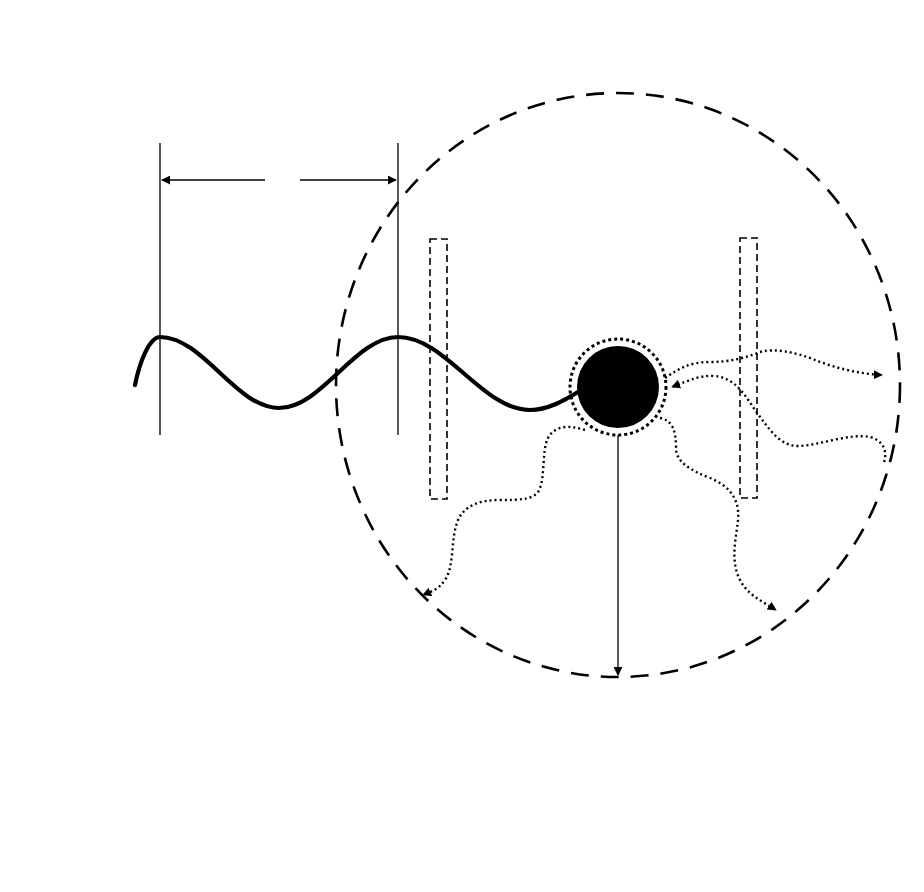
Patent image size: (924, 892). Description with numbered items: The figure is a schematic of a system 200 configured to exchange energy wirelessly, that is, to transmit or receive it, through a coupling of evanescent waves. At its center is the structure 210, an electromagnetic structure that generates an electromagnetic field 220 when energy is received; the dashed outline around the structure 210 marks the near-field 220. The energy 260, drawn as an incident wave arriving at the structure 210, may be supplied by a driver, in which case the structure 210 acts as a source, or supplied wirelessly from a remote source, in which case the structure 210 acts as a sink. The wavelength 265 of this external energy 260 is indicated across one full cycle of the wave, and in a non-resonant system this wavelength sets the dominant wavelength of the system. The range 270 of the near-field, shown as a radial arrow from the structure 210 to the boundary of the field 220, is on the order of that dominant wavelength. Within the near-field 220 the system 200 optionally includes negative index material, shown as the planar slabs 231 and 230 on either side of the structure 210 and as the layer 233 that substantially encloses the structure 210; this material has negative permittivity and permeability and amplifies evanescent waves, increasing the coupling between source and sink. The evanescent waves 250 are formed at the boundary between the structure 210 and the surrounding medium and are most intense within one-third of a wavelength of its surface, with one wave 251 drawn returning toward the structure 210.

The system 200 is at (517, 436).
The structure 210 is at (590, 346).
The electromagnetic field 220 is at (470, 132).
The negative index material 230 is at (759, 256).
The negative index material 231 is at (449, 265).
The negative index material 233 is at (632, 338).
The evanescent waves 250 is at (487, 500).
The reflected electromagnetic wave 251 is at (815, 444).
The energy 260 is at (325, 398).
The wavelength 265 is at (288, 144).
The range of the near-field 270 is at (618, 548).